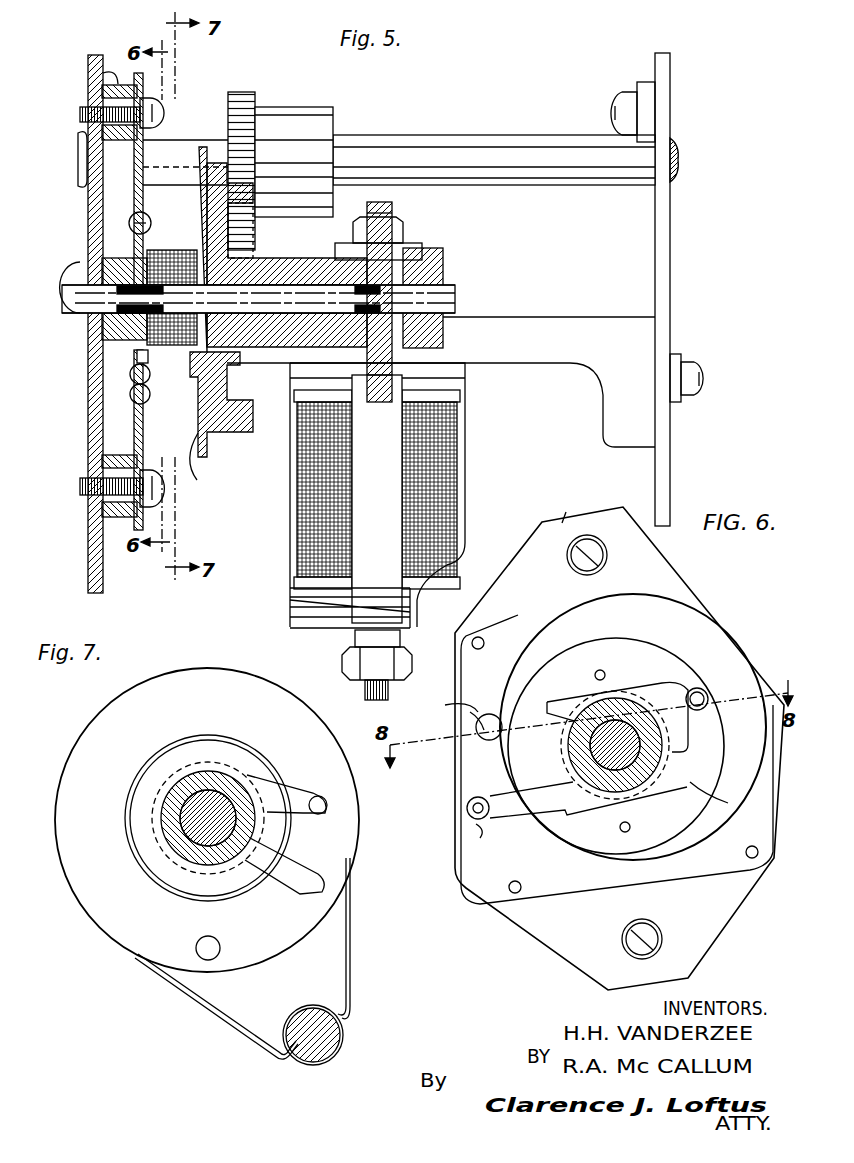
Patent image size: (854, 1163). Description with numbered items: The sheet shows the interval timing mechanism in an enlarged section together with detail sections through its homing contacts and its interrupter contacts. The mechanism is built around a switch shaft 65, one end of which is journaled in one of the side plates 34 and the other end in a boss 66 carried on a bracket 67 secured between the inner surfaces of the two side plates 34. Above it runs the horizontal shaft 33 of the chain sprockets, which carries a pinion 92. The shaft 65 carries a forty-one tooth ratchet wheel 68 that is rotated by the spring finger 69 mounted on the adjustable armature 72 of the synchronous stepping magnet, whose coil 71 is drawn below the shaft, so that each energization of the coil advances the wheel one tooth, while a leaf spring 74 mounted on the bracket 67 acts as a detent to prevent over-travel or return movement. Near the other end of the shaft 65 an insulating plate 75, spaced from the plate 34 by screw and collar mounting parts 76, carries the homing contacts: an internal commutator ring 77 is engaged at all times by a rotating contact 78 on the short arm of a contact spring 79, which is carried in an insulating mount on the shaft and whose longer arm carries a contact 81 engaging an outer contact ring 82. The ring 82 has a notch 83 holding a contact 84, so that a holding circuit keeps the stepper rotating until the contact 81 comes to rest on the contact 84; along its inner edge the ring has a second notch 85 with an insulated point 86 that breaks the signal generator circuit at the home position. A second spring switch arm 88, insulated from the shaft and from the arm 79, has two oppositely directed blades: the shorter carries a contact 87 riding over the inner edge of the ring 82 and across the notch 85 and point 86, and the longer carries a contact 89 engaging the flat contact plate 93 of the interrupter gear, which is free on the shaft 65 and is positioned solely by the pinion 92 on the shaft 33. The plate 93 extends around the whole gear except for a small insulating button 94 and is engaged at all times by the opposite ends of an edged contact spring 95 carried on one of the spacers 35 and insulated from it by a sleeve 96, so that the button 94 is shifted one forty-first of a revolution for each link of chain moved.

In FIG. 5, the horizontal shaft 33 is at (525, 132).
In FIG. 5, the side plate 34 is at (88, 402).
In FIG. 7, the spacer 35 is at (328, 1038).
In FIG. 5, the switch shaft 65 is at (73, 307).
In FIG. 6, the switch shaft 65 is at (620, 740).
In FIG. 7, the switch shaft 65 is at (205, 822).
In FIG. 5, the boss 66 is at (438, 260).
In FIG. 5, the bracket 67 is at (510, 317).
In FIG. 5, the ratchet wheel 68 is at (382, 400).
In FIG. 5, the spring finger 69 is at (386, 509).
In FIG. 5, the solenoid coil 71 is at (455, 475).
In FIG. 5, the adjustable armature 72 is at (293, 608).
In FIG. 5, the leaf spring 74 is at (402, 225).
In FIG. 5, the insulating plate 75 is at (145, 90).
In FIG. 6, the insulating plate 75 is at (570, 505).
In FIG. 5, the screw and collar mounting parts 76 is at (117, 77).
In FIG. 6, the screw and collar mounting parts 76 is at (655, 553).
In FIG. 5, the internal commutator ring 77 is at (150, 442).
In FIG. 6, the internal commutator ring 77 is at (668, 665).
In FIG. 5, the rotating contact 78 is at (150, 152).
In FIG. 6, the rotating contact 78 is at (704, 695).
In FIG. 6, the contact spring 79 is at (724, 800).
In FIG. 6, the contact 81 is at (467, 807).
In FIG. 6, the outer contact ring 82 is at (498, 875).
In FIG. 6, the notch 83 is at (478, 834).
In FIG. 5, the contact 84 is at (159, 221).
In FIG. 6, the contact 84 is at (483, 798).
In FIG. 6, the notch 85 is at (448, 710).
In FIG. 6, the insulated point 86 is at (496, 714).
In FIG. 7, the contact 87 is at (321, 795).
In FIG. 7, the second spring switch arm 88 is at (250, 775).
In FIG. 7, the contact 89 is at (306, 893).
In FIG. 5, the pinion 92 is at (248, 105).
In FIG. 5, the contact plate 93 is at (207, 452).
In FIG. 7, the contact plate 93 is at (82, 736).
In FIG. 5, the insulating button 94 is at (204, 467).
In FIG. 7, the insulating button 94 is at (196, 945).
In FIG. 7, the edged contact spring 95 is at (222, 1020).
In FIG. 7, the sleeve 96 is at (312, 1066).